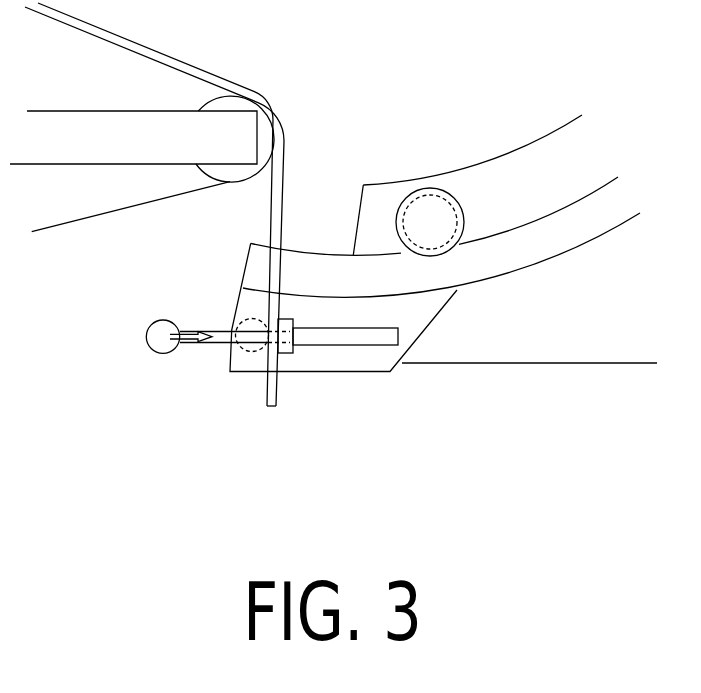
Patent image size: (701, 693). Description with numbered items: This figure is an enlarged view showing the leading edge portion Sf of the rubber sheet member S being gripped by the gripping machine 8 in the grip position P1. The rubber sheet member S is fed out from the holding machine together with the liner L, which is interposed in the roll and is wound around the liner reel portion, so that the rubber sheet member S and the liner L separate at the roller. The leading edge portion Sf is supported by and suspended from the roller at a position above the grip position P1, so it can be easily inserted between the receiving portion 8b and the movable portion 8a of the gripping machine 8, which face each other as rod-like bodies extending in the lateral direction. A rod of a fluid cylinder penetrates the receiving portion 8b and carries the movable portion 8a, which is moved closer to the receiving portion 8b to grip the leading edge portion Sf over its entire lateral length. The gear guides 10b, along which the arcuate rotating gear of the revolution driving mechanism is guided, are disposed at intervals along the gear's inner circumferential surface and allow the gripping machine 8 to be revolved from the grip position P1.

The rubber sheet member S is at (196, 70).
The liner L is at (163, 199).
The gear guide 10b is at (427, 205).
The movable portion 8a is at (158, 328).
The gripping machine 8 is at (205, 368).
The receiving portion 8b is at (298, 324).
The leading edge portion Sf is at (270, 345).
The grip position P1 is at (310, 437).